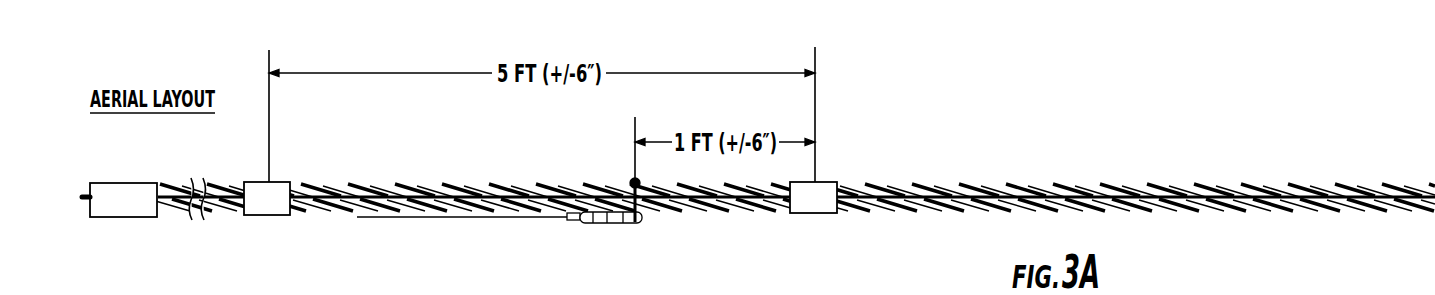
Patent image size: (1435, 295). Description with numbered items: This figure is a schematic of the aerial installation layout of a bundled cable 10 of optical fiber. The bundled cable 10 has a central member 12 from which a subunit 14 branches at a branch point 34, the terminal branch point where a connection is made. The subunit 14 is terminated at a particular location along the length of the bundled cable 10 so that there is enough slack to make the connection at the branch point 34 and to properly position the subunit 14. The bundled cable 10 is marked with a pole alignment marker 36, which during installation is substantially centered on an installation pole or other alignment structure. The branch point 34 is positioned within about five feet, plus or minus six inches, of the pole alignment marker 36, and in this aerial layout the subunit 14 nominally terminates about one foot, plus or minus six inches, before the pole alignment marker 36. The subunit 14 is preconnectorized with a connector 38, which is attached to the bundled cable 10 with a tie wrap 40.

The bundled cable 10 is at (215, 188).
The central member 12 is at (388, 192).
The subunit 14 is at (500, 218).
The branch point 34 is at (270, 215).
The pole alignment marker 36 is at (832, 182).
The connector 38 is at (610, 223).
The tie wrap 40 is at (630, 182).